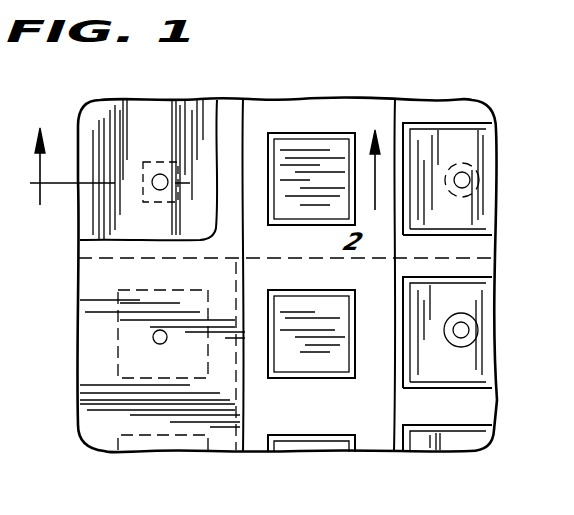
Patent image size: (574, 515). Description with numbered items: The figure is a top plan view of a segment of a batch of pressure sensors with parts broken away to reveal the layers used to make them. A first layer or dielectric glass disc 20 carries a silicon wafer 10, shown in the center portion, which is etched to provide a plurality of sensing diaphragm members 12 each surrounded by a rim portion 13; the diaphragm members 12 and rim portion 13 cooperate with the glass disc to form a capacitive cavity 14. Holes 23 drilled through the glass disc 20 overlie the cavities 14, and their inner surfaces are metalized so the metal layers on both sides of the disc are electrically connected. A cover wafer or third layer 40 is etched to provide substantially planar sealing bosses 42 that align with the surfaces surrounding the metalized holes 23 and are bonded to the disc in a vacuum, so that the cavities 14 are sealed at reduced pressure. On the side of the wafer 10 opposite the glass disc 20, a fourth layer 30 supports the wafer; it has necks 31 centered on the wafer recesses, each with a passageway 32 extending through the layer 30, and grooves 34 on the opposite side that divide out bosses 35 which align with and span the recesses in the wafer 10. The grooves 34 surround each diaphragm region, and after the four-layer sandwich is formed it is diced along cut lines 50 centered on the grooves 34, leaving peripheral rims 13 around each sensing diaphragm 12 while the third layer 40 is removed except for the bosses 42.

The silicon wafer 10 is at (257, 116).
The sensing diaphragm member 12 is at (335, 156).
The rim portion 13 is at (342, 286).
The cavity 14 is at (314, 134).
The dielectric disc 20 is at (178, 420).
The hole 23 is at (152, 337).
The fourth layer 30 is at (482, 249).
The neck 31 is at (470, 168).
The passageway 32 is at (471, 180).
The groove 34 is at (477, 265).
The boss 35 is at (446, 146).
The cover wafer 40 is at (176, 116).
The sealing boss 42 is at (155, 161).
The cut line 50 is at (236, 289).